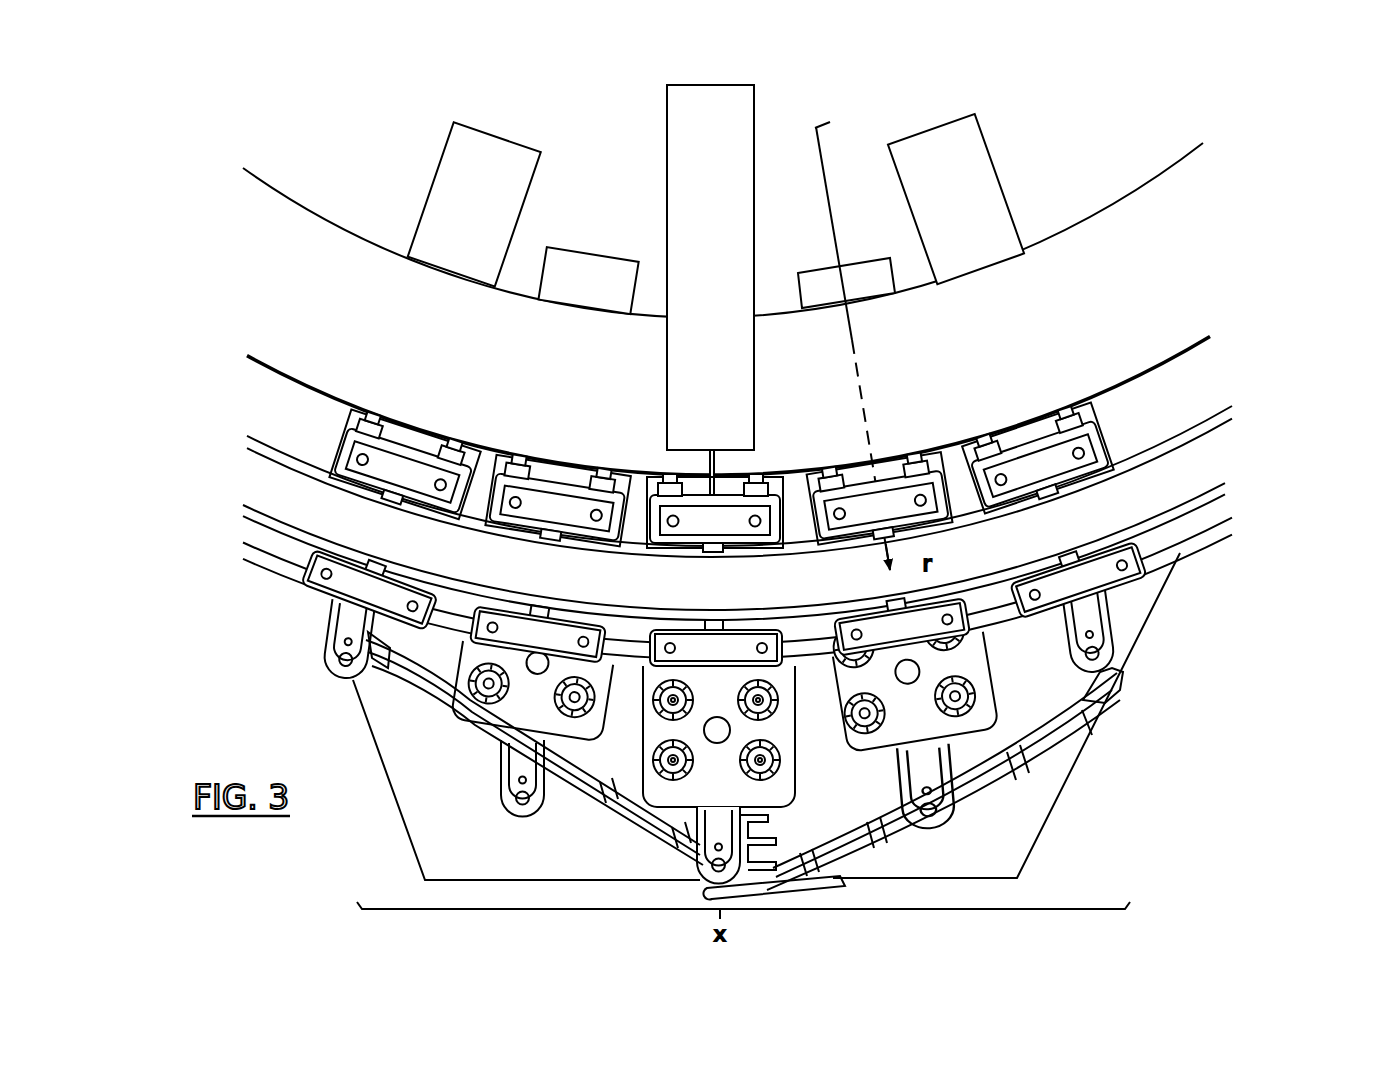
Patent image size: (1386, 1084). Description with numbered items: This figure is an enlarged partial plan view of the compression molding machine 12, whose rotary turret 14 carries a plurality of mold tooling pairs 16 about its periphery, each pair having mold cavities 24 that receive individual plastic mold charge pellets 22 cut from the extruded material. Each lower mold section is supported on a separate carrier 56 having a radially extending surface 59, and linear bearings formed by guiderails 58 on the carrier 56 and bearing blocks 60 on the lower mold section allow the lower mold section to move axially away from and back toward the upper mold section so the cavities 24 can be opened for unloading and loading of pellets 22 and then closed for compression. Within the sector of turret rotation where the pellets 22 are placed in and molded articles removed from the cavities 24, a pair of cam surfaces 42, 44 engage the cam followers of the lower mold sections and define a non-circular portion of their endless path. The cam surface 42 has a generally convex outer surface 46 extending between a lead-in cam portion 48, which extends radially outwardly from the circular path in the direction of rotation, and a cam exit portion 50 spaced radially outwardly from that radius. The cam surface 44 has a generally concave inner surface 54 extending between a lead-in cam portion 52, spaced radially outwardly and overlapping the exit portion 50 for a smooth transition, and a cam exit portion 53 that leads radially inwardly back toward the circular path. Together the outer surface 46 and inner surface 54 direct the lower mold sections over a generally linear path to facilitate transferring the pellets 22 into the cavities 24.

The compression molding machine 12 is at (1262, 490).
The rotary turret 14 is at (225, 576).
The mold tooling pairs 16 is at (1163, 584).
The mold charge pellets 22 is at (668, 772).
The mold cavities 24 is at (736, 757).
The cam surface 42 is at (436, 718).
The cam surface 44 is at (1058, 752).
The convex outer surface 46 is at (408, 708).
The lead-in cam portion 48 is at (352, 682).
The cam exit portion 50 is at (695, 846).
The lead-in cam portion 52 is at (772, 870).
The cam exit portion 53 is at (1122, 704).
The concave inner surface 54 is at (987, 797).
The carrier 56 is at (322, 438).
The guiderails 58 is at (437, 440).
The radially extending surface 59 is at (563, 255).
The bearing blocks 60 is at (355, 418).